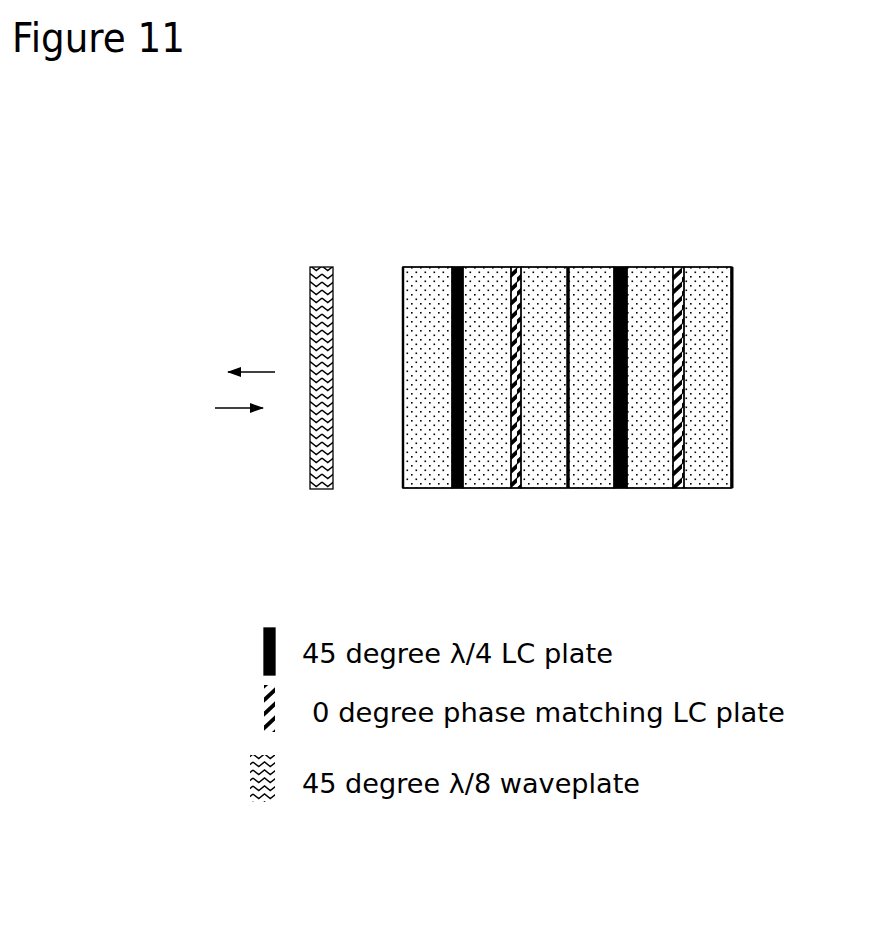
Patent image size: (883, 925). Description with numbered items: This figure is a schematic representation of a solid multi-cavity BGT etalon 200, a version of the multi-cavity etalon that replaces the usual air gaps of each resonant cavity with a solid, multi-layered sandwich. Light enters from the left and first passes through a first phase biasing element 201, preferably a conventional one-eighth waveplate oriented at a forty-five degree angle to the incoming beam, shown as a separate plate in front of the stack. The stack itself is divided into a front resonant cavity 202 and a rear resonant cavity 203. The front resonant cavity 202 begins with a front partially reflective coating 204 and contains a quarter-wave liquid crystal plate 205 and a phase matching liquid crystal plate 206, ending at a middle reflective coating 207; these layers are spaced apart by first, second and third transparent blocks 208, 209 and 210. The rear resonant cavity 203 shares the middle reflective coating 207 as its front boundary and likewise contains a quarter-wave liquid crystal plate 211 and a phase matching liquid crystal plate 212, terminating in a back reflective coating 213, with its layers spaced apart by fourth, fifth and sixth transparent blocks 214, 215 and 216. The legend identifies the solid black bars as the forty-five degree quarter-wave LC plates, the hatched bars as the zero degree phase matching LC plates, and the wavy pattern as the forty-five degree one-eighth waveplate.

The solid multi-cavity BGT etalon 200 is at (702, 135).
The first phase biasing element 201 is at (310, 280).
The front resonant cavity 202 is at (368, 150).
The rear resonant cavity 203 is at (745, 350).
The front partially reflective coating 204 is at (402, 263).
The ¼ wave liquid crystal plate 205 is at (458, 270).
The phase matching liquid crystal plate 206 is at (510, 270).
The middle reflective coating 207 is at (568, 267).
The first transparent block 208 is at (428, 473).
The second transparent block 209 is at (483, 473).
The third transparent block 210 is at (547, 473).
The ¼ wave liquid crystal plate 211 is at (625, 270).
The phase matching liquid crystal plate 212 is at (678, 275).
The back reflective coating 213 is at (735, 267).
The fourth transparent block 214 is at (592, 473).
The fifth transparent block 215 is at (635, 473).
The sixth transparent block 216 is at (720, 473).